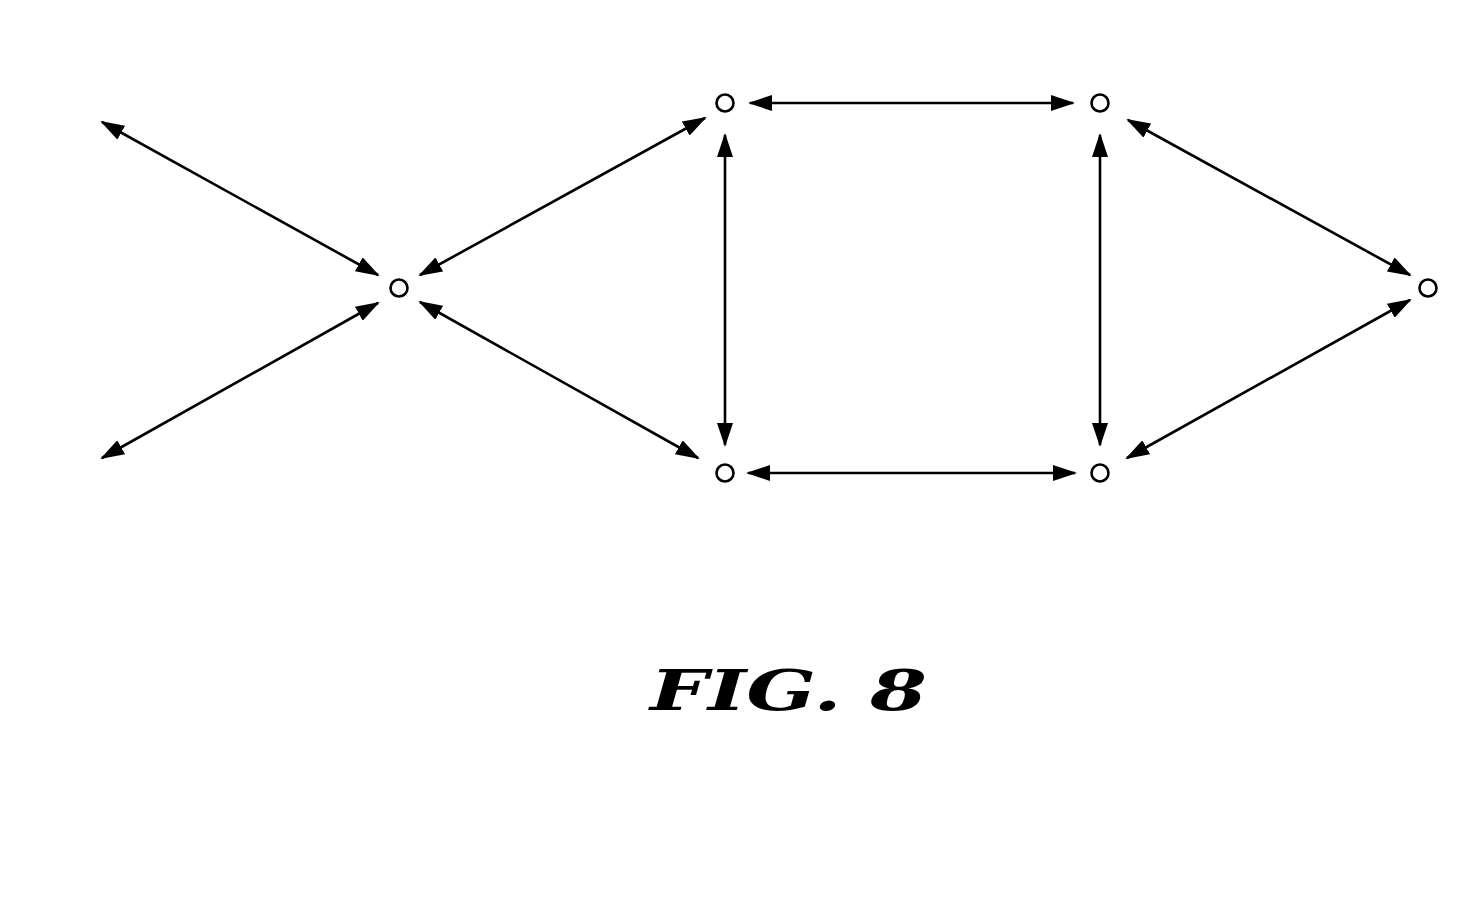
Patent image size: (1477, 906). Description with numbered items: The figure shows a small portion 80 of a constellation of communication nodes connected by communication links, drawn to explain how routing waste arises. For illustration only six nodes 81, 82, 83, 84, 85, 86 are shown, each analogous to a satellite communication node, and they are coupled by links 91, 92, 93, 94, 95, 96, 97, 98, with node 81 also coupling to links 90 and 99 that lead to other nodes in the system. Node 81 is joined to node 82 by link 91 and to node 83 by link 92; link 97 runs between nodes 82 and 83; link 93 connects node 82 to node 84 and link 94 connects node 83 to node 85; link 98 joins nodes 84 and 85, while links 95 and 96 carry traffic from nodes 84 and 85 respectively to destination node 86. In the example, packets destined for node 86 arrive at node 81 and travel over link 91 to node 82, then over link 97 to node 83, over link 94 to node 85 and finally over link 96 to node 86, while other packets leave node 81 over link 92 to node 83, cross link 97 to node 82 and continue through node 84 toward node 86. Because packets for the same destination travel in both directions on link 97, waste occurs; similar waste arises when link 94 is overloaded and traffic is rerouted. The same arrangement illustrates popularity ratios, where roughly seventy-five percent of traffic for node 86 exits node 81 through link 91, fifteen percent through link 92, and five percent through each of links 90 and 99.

The small portion of a constellation of communication nodes 80 is at (940, 600).
The communication node 81 is at (402, 280).
The communication node 82 is at (722, 95).
The communication node 83 is at (727, 482).
The communication node 84 is at (1106, 96).
The communication node 85 is at (1098, 482).
The destination node 86 is at (1428, 297).
The communication link 90 is at (242, 200).
The communication link 91 is at (540, 207).
The communication link 92 is at (548, 375).
The communication link 93 is at (893, 102).
The communication link 94 is at (885, 474).
The communication link 95 is at (1282, 202).
The communication link 96 is at (1283, 372).
The communication link 97 is at (725, 283).
The communication link 98 is at (1100, 260).
The communication link 99 is at (243, 380).